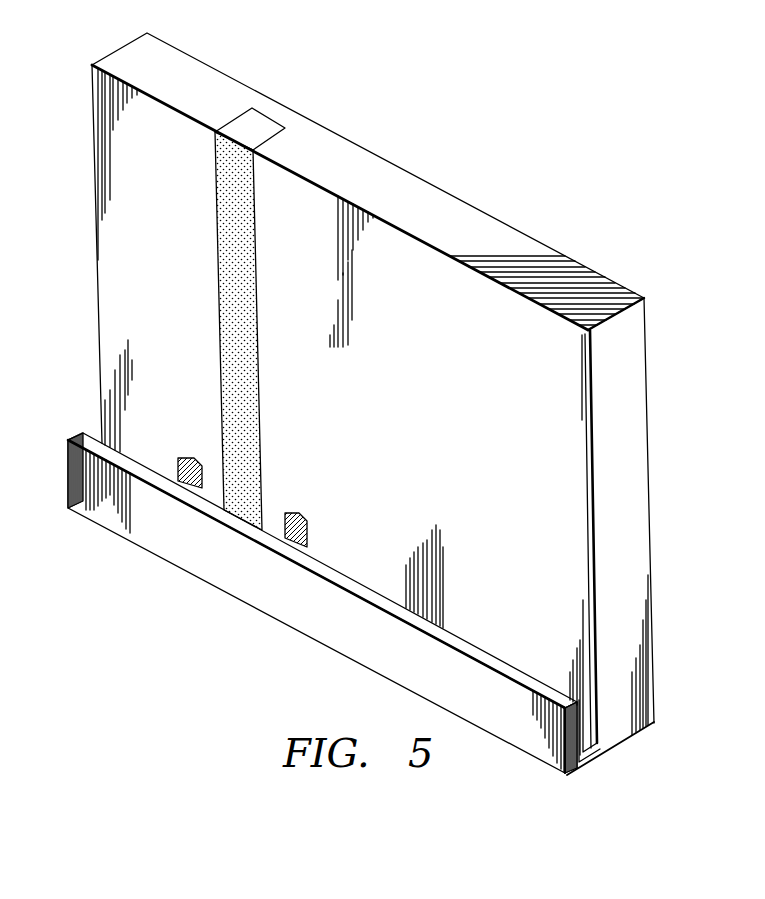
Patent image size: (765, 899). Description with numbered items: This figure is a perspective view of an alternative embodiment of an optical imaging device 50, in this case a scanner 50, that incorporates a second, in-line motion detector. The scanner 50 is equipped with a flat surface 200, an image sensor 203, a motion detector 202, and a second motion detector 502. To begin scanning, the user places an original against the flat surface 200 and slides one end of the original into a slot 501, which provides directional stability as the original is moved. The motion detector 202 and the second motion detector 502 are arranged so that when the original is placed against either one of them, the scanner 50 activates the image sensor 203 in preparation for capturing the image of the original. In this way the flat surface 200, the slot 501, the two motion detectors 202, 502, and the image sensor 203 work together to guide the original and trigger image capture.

The optical imaging device 50 is at (421, 141).
The flat surface 200 is at (102, 310).
The image sensor 203 is at (265, 123).
The motion detector 202 is at (298, 513).
The second motion detector 502 is at (185, 458).
The slot 501 is at (595, 752).